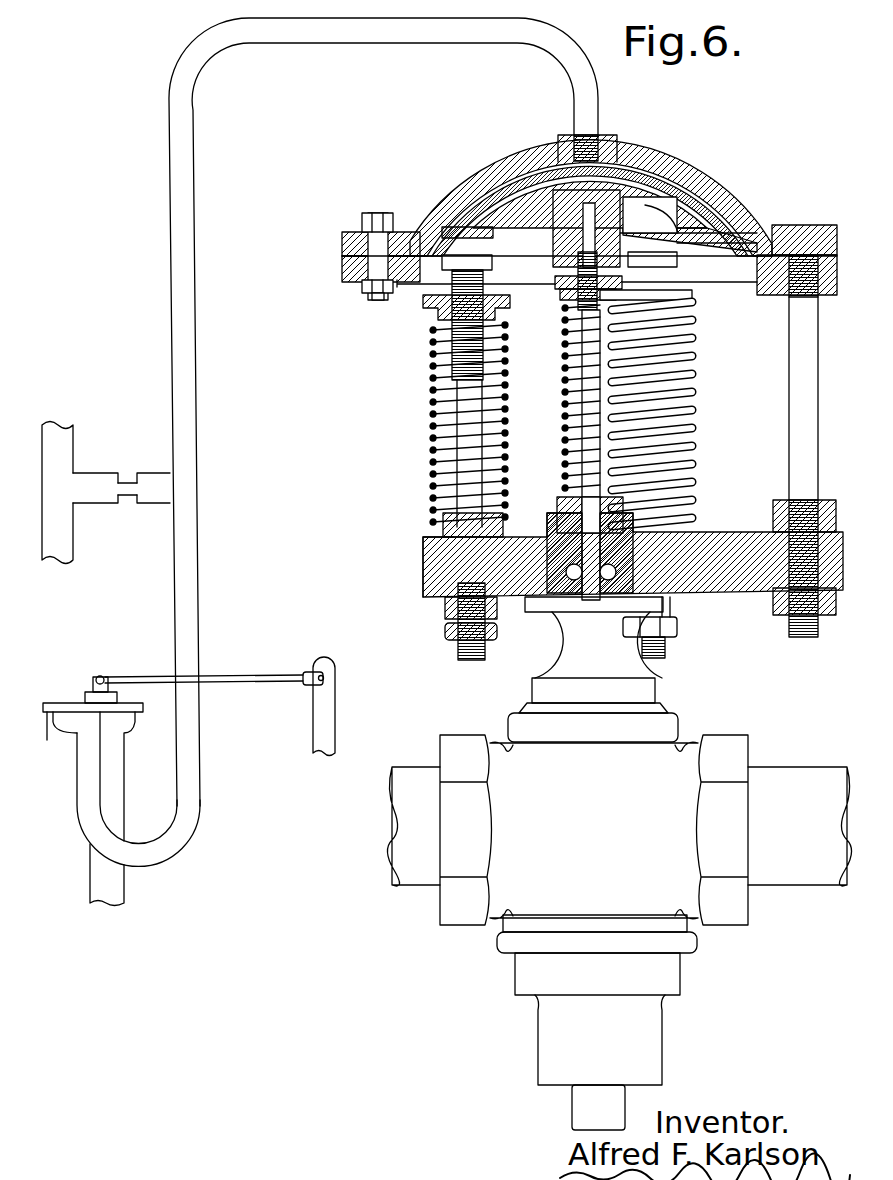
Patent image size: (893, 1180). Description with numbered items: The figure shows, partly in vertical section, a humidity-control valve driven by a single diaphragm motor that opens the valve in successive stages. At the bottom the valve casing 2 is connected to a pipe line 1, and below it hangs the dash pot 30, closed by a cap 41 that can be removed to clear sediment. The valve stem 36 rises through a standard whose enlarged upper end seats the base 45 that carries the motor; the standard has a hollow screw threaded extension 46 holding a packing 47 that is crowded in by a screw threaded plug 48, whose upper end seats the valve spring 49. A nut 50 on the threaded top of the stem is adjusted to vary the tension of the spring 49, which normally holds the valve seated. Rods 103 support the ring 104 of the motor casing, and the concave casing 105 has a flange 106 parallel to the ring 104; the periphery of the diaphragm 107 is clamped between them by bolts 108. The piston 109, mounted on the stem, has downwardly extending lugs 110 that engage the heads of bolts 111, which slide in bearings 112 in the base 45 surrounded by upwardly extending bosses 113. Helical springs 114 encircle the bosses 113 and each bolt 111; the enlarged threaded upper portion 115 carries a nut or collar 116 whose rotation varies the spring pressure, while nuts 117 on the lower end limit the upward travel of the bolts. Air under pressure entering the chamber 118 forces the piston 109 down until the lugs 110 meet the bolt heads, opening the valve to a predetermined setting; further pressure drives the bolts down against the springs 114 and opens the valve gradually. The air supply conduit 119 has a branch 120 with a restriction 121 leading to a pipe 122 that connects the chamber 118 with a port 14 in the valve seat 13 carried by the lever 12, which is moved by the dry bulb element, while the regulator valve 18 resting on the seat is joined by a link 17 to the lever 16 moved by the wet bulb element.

The pipe line 1 is at (785, 770).
The valve casing 2 is at (723, 737).
The lever 12 is at (115, 887).
The valve seat 13 is at (89, 776).
The port 14 is at (83, 708).
The lever 16 is at (315, 718).
The link 17 is at (145, 673).
The valve 18 is at (87, 692).
The dash pot 30 is at (540, 1028).
The valve stem 36 is at (585, 460).
The cap 41 is at (577, 1102).
The base 45 is at (425, 562).
The hollow screw threaded extension 46 is at (558, 543).
The packing 47 is at (573, 580).
The screw threaded plug 48 is at (560, 510).
The valve spring 49 is at (565, 398).
The nut 50 is at (557, 290).
The rods 103 is at (790, 408).
The ring 104 is at (782, 295).
The concave casing 105 is at (440, 200).
The flange 106 is at (812, 225).
The diaphragm 107 is at (425, 235).
The bolts 108 is at (377, 240).
The piston 109 is at (503, 203).
The lugs 110 is at (460, 237).
The bolts 111 is at (490, 263).
The bearings 112 is at (425, 547).
The bosses 113 is at (437, 515).
The helical springs 114 is at (435, 405).
The upper portion 115 is at (455, 340).
The nut or collar 116 is at (425, 307).
The nuts 117 is at (448, 630).
The chamber 118 is at (542, 172).
The conduit 119 is at (58, 438).
The branch 120 is at (88, 475).
The restriction 121 is at (127, 483).
The pipe 122 is at (198, 299).